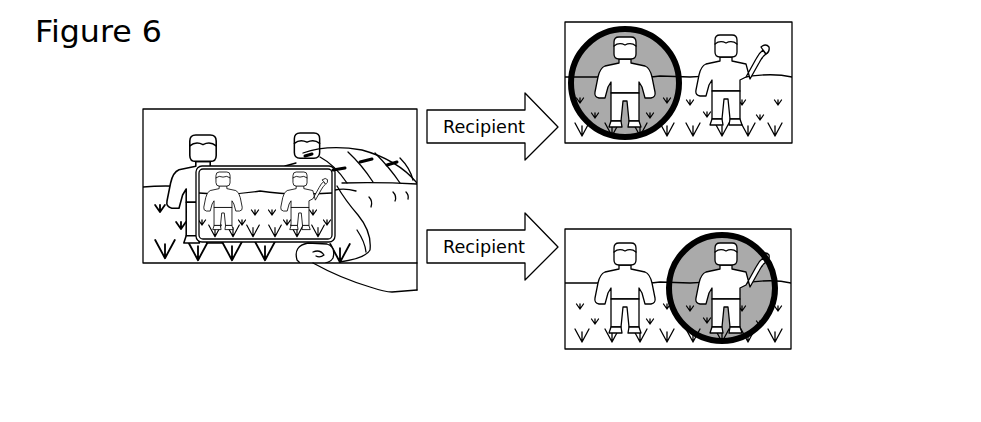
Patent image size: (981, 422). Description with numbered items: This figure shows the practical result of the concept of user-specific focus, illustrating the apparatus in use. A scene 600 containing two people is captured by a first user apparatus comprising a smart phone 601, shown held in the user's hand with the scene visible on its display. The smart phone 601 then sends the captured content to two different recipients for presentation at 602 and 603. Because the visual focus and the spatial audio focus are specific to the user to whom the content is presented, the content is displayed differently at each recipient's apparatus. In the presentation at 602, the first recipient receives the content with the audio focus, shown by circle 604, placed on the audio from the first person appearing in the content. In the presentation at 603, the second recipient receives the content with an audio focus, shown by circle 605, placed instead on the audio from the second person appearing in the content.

The scene 600 is at (280, 181).
The smart phone 601 is at (262, 218).
The presentation at first recipient 602 is at (666, 82).
The presentation at second recipient 603 is at (716, 316).
The circle 604 is at (583, 47).
The circle 605 is at (762, 328).